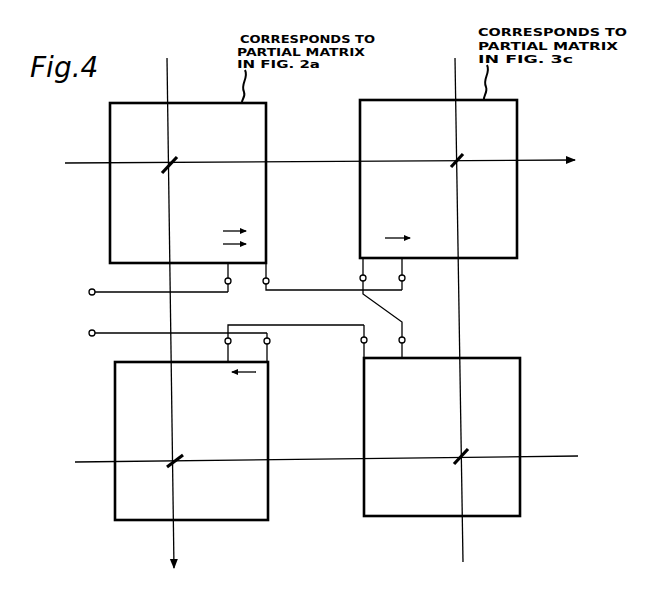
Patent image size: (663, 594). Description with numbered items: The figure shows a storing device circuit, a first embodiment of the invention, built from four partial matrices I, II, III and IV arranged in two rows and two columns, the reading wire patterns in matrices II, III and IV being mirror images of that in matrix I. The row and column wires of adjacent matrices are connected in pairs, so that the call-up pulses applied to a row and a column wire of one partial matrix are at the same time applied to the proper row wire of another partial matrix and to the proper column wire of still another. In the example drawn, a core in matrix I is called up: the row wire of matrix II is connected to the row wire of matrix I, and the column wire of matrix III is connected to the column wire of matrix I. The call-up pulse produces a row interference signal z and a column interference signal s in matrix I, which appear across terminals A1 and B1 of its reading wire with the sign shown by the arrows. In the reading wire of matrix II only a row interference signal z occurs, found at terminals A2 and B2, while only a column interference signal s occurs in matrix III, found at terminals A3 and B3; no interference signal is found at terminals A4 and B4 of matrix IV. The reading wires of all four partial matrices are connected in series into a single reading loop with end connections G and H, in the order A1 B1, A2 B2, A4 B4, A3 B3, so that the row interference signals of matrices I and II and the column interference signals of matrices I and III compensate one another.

The partial matrix I is at (208, 101).
The partial matrix II is at (408, 99).
The partial matrix III is at (231, 522).
The partial matrix IV is at (497, 517).
The terminal A1 is at (216, 277).
The terminal B1 is at (313, 276).
The terminal A2 is at (413, 274).
The terminal B2 is at (372, 299).
The terminal A3 is at (282, 343).
The terminal B3 is at (278, 347).
The terminal A4 is at (412, 345).
The terminal B4 is at (352, 341).
The connection G is at (151, 293).
The connection H is at (170, 334).
The row interference signal z is at (320, 236).
The column interference signal s is at (235, 309).